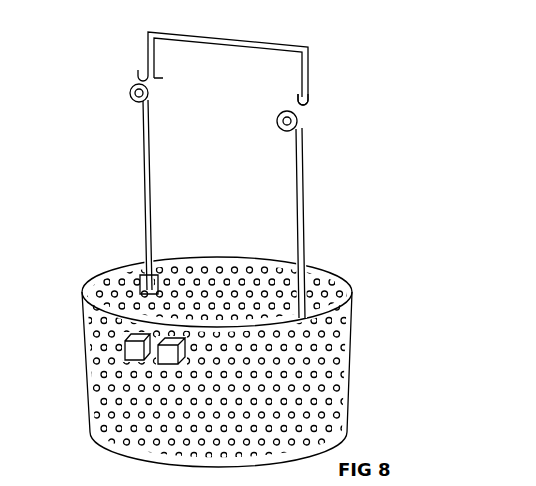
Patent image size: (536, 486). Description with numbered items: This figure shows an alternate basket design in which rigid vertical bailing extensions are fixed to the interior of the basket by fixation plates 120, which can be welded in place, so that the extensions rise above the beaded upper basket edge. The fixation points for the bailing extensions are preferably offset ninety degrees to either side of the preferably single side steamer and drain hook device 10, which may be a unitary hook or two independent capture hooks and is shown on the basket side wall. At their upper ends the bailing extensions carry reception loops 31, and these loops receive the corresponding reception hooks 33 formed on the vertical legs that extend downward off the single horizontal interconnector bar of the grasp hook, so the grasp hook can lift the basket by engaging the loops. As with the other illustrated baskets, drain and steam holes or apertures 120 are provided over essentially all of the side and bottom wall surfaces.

The fixation plates 120 is at (168, 268).
The steamer and drain hook device 10 is at (167, 351).
The reception loops 31 is at (129, 86).
The reception hooks 33 is at (309, 101).